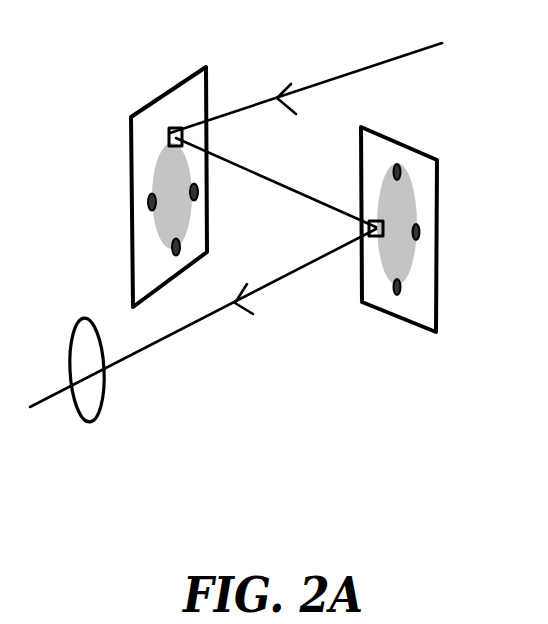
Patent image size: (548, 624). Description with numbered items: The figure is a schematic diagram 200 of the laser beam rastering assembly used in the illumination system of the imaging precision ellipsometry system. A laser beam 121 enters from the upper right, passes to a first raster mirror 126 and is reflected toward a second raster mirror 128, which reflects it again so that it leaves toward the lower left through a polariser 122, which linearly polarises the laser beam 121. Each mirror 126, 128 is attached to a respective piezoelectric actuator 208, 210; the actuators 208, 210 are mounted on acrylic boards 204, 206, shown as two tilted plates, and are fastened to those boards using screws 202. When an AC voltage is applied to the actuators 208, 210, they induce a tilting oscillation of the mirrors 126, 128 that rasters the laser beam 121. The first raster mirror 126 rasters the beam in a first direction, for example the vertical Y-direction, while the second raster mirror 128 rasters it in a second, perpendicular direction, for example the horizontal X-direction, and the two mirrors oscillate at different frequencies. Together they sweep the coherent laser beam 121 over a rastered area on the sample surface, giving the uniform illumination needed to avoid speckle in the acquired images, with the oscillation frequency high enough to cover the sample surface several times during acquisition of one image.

The laser beam 121 is at (400, 62).
The polariser 122 is at (92, 425).
The first raster mirror 126 is at (173, 128).
The second raster mirror 128 is at (378, 236).
The schematic diagram 200 is at (434, 474).
The screws 202 is at (420, 232).
The acrylic board 204 is at (138, 157).
The acrylic board 206 is at (427, 297).
The piezoelectric actuator 208 is at (167, 222).
The piezoelectric actuator 210 is at (410, 200).